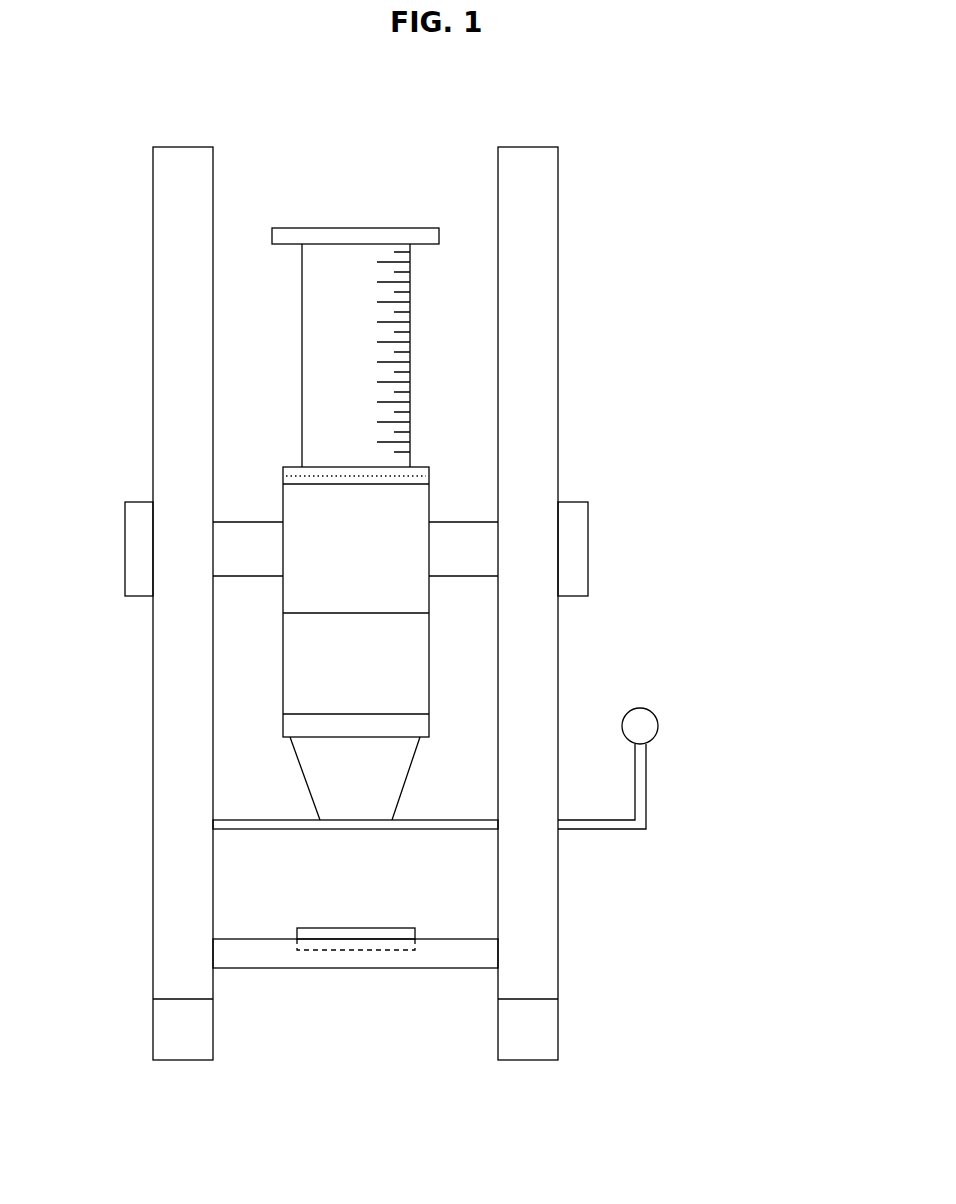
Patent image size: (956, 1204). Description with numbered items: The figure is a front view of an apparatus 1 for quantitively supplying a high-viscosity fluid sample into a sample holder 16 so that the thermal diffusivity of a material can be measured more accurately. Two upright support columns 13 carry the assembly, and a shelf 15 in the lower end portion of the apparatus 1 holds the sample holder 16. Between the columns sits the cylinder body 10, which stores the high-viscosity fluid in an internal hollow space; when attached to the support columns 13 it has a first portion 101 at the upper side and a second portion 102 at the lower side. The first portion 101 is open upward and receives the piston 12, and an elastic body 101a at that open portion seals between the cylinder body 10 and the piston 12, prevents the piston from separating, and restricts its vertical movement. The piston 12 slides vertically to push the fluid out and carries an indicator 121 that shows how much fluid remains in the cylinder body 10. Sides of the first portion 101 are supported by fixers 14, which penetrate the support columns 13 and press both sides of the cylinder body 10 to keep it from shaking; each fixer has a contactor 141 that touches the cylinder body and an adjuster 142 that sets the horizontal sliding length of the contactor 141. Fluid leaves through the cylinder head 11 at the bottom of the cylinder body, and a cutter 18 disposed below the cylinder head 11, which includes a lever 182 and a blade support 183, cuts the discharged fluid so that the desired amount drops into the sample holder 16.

The apparatus 1 is at (360, 99).
The support columns 13 is at (517, 198).
The piston 12 is at (322, 388).
The indicator 121 is at (396, 303).
The cylinder body 10 is at (497, 572).
The elastic body 101a is at (418, 478).
The first portion 101 is at (410, 595).
The second portion 102 is at (410, 645).
The fixers 14 is at (418, 526).
The contactor 141 is at (472, 532).
The adjuster 142 is at (609, 549).
The cylinder head 11 is at (317, 761).
The cutter 18 is at (498, 794).
The lever 182 is at (646, 768).
The blade support 183 is at (435, 825).
The shelf 15 is at (430, 952).
The sample holder 16 is at (312, 928).